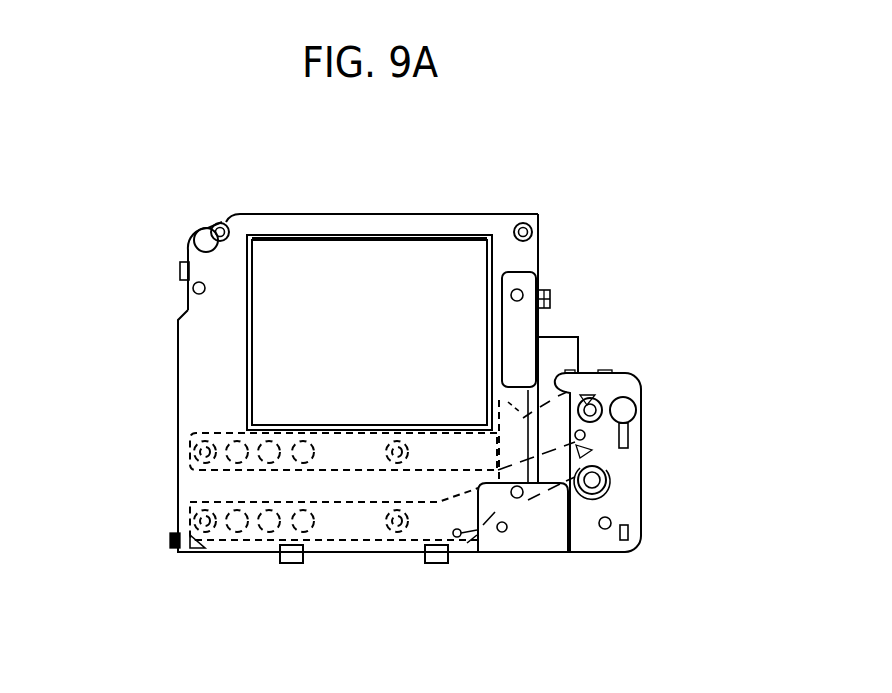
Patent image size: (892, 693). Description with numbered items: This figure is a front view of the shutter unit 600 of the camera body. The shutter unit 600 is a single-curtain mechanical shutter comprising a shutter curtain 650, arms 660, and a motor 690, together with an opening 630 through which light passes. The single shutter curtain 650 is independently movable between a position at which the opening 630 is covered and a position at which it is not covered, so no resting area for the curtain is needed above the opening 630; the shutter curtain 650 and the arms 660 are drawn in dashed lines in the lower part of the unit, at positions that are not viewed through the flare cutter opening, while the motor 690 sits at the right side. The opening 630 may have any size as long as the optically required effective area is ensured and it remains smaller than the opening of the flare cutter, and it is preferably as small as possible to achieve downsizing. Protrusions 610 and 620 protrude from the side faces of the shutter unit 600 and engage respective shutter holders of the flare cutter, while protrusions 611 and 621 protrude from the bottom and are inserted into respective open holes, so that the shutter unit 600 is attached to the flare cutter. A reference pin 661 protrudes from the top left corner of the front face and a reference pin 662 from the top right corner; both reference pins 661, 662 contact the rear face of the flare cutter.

The shutter unit 600 is at (548, 178).
The protrusion 610 is at (550, 293).
The protrusion 611 is at (436, 548).
The protrusion 620 is at (180, 265).
The protrusion 621 is at (292, 550).
The opening 630 is at (402, 278).
The shutter curtain 650 is at (205, 482).
The arms 660 is at (515, 440).
The reference pin 661 is at (208, 223).
The reference pin 662 is at (533, 226).
The motor 690 is at (612, 490).